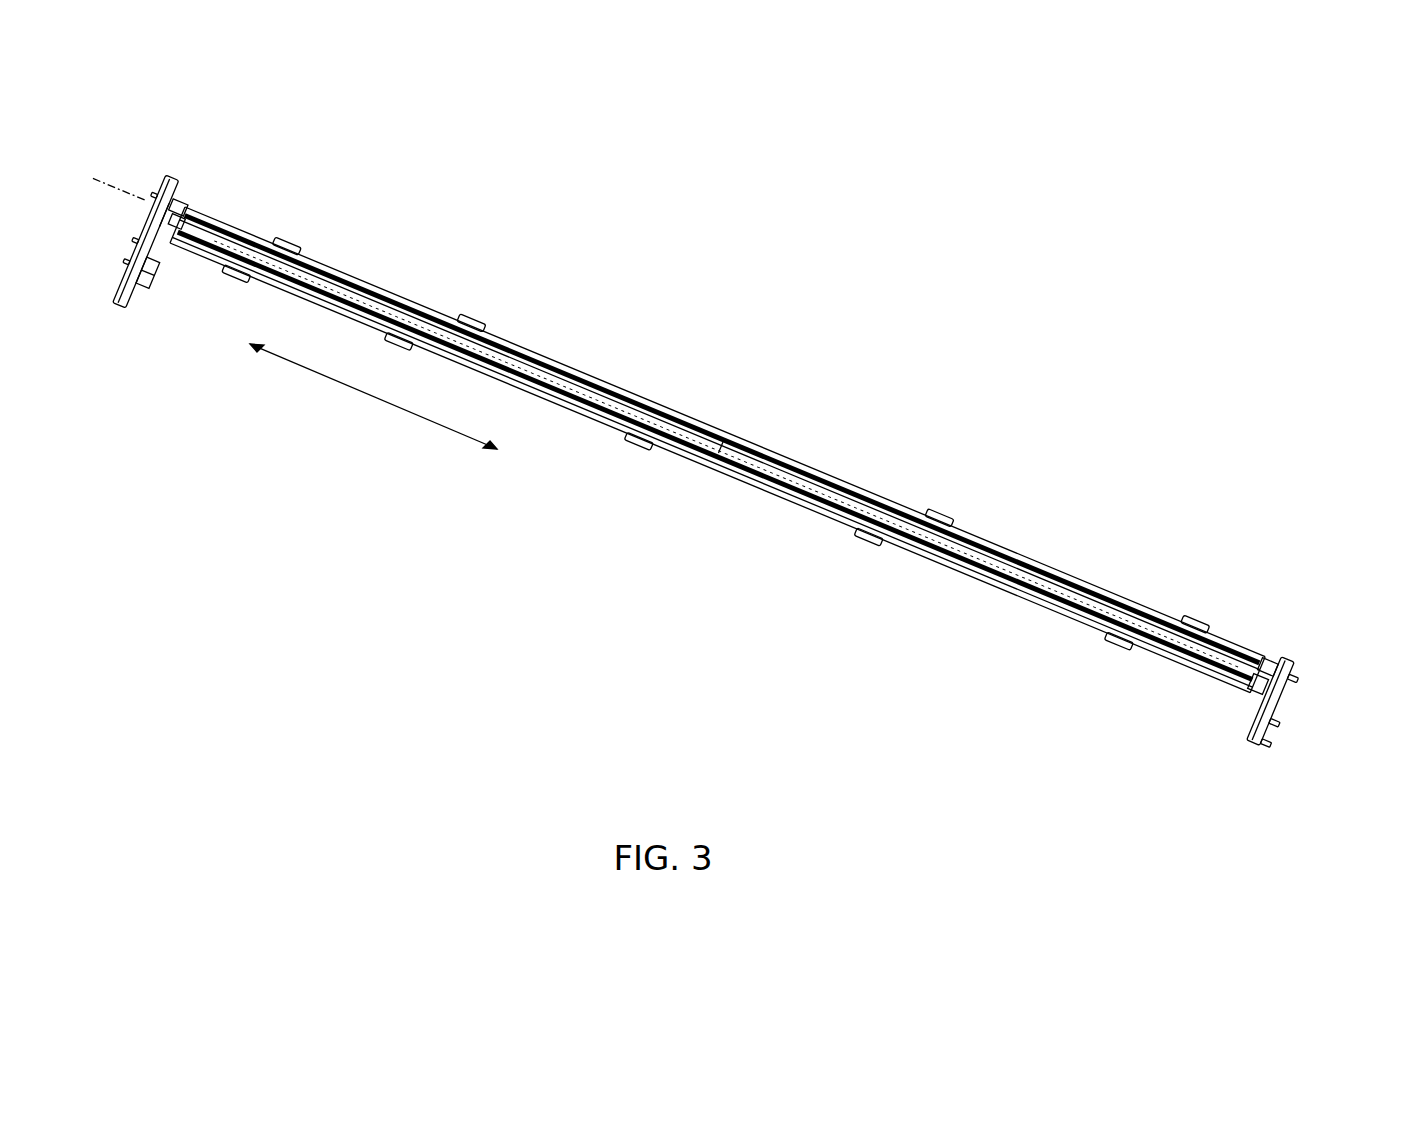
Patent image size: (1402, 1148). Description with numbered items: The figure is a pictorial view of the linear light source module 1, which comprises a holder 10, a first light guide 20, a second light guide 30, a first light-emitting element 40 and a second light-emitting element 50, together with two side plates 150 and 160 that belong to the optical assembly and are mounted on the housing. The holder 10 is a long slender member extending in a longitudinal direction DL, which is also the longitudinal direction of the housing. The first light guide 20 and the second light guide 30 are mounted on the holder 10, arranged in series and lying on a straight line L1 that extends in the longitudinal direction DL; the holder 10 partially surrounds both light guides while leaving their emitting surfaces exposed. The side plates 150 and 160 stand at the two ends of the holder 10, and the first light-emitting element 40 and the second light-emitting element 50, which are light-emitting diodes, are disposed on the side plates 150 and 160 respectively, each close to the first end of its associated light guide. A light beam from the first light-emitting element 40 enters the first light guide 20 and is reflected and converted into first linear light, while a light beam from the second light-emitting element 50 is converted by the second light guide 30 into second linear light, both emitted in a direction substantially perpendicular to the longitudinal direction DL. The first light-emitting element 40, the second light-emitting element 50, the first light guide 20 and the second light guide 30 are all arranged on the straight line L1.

The linear light source module 1 is at (666, 296).
The holder 10 is at (702, 420).
The first light guide 20 is at (298, 267).
The second light guide 30 is at (850, 502).
The first light-emitting element 40 is at (187, 210).
The second light-emitting element 50 is at (1257, 690).
The side plate 150 is at (117, 307).
The side plate 160 is at (1287, 659).
The straight line L1 is at (103, 182).
The longitudinal direction DL is at (373, 396).